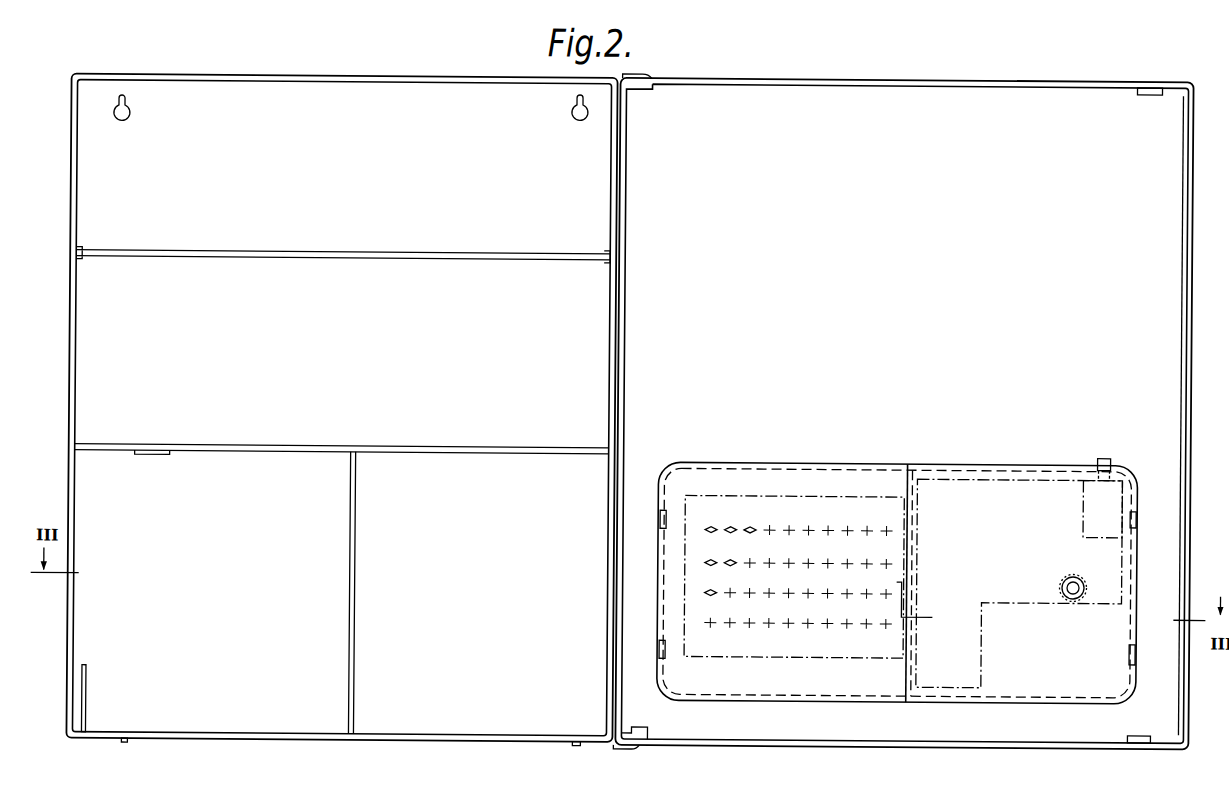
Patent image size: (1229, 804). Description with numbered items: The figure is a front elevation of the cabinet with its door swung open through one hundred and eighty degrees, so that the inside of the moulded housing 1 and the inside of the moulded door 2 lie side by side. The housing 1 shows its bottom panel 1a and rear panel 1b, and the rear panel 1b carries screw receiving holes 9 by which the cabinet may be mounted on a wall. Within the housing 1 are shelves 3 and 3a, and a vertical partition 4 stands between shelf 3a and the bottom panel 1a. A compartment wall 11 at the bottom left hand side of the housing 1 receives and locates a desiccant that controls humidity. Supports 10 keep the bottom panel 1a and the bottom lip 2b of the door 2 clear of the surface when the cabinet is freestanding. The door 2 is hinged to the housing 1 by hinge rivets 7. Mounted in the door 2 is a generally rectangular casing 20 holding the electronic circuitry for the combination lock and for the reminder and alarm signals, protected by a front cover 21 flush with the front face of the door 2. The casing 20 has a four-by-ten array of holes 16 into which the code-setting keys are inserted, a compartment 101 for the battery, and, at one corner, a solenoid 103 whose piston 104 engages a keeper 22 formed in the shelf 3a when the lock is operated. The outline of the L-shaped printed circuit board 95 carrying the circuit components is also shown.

The housing 1 is at (266, 745).
The bottom panel 1a is at (412, 735).
The rear panel 1b is at (334, 373).
The door 2 is at (941, 750).
The bottom lip 2b is at (1059, 749).
The shelf 3 is at (391, 253).
The shelf 3a is at (403, 448).
The vertical partition 4 is at (350, 546).
The hinge rivets 7 is at (634, 78).
The screw receiving holes 9 is at (122, 104).
The supports 10 is at (125, 746).
The compartment wall 11 is at (91, 696).
The holes 16 is at (709, 527).
The casing 20 is at (863, 462).
The front cover 21 is at (1101, 579).
The keeper 22 is at (150, 459).
The printed circuit board 95 is at (1115, 548).
The compartment 101 is at (1107, 669).
The solenoid 103 is at (1131, 484).
The piston 104 is at (1103, 451).